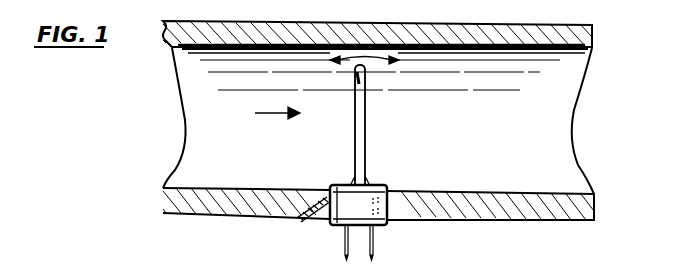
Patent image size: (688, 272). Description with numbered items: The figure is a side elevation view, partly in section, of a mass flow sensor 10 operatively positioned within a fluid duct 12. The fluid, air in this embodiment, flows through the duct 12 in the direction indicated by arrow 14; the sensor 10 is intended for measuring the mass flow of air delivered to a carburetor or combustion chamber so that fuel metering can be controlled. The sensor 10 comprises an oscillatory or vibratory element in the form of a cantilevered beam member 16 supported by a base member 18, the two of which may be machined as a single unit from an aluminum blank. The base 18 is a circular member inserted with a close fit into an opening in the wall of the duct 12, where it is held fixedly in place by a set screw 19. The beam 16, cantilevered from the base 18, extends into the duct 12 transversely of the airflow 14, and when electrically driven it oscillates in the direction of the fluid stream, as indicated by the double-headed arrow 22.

The sensor 10 is at (372, 128).
The duct 12 is at (592, 36).
The arrow indicating direction of airflow 14 is at (260, 113).
The cantilevered beam member 16 is at (366, 150).
The base member 18 is at (388, 190).
The set screw 19 is at (296, 217).
The double-headed arrow 22 is at (385, 63).